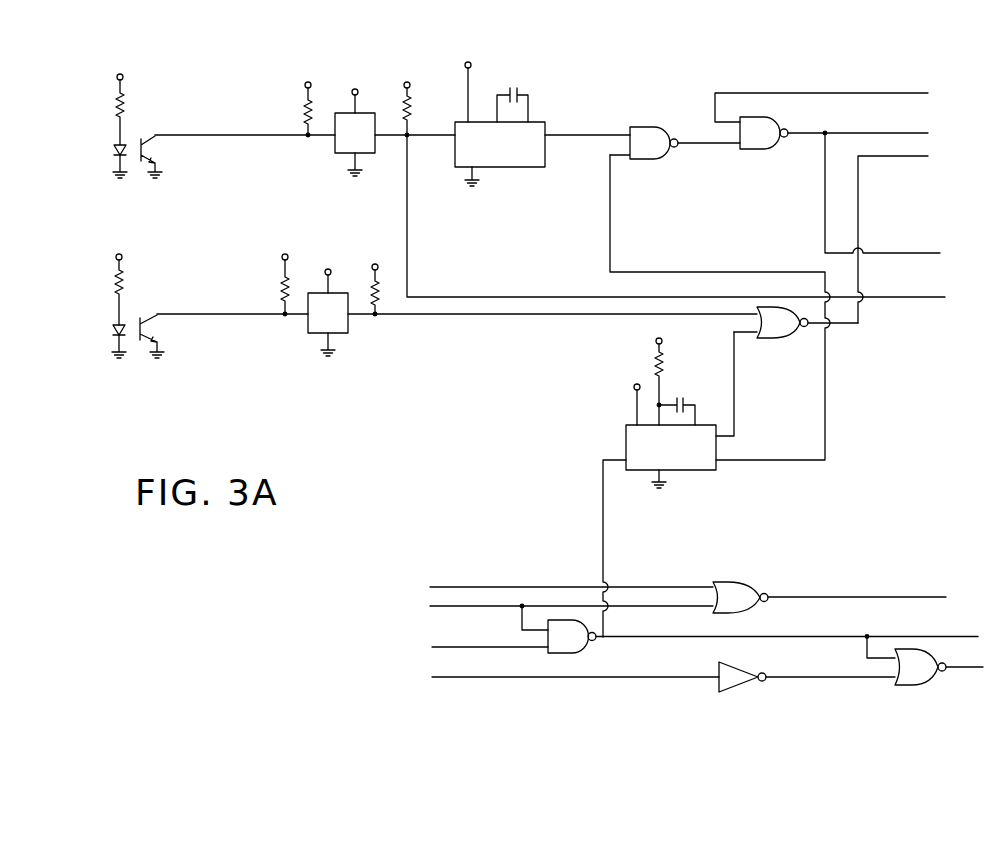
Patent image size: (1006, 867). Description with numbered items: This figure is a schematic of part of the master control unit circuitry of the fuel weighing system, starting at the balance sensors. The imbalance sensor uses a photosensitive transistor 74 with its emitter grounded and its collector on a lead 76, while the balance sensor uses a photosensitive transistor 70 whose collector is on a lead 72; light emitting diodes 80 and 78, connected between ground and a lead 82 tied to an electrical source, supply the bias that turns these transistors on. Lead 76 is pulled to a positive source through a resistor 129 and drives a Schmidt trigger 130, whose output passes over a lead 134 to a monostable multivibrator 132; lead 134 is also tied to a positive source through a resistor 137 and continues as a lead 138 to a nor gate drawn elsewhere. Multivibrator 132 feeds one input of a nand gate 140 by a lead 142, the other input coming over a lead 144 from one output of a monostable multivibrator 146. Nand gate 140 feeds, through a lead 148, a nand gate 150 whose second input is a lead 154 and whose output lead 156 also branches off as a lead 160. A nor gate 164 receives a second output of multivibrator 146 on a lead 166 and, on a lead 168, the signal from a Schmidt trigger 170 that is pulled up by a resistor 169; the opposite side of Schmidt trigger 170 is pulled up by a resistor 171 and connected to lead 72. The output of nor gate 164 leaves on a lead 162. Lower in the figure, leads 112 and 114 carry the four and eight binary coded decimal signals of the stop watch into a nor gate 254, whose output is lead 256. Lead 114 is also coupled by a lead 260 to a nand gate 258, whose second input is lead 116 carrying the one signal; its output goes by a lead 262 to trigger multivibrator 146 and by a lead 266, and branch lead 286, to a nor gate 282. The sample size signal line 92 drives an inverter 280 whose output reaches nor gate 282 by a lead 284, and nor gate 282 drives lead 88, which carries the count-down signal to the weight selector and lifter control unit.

The lead 82 is at (116, 84).
The light emitting diode 80 is at (113, 151).
The photosensitive transistor 74 is at (146, 150).
The lead 76 is at (230, 134).
The resistor 129 is at (305, 103).
The Schmidt trigger 130 is at (366, 113).
The lead 134 is at (421, 134).
The resistor 137 is at (410, 103).
The lead 138 is at (722, 296).
The monostable multivibrator 132 is at (536, 121).
The lead 142 is at (583, 134).
The nand gate 140 is at (651, 128).
The lead 148 is at (708, 146).
The nand gate 150 is at (762, 150).
The lead 154 is at (790, 92).
The lead 156 is at (853, 132).
The lead 160 is at (905, 252).
The lead 162 is at (860, 197).
The lead 144 is at (724, 271).
The light emitting diode 78 is at (112, 329).
The photosensitive transistor 70 is at (146, 329).
The lead 72 is at (213, 313).
The resistor 171 is at (283, 284).
The Schmidt trigger 170 is at (350, 286).
The resistor 169 is at (380, 272).
The lead 168 is at (572, 315).
The nor gate 164 is at (780, 340).
The lead 166 is at (735, 396).
The monostable multivibrator 146 is at (706, 471).
The lead 262 is at (604, 523).
The lead 112 is at (462, 587).
The lead 114 is at (425, 605).
The nor gate 254 is at (749, 590).
The lead 256 is at (870, 596).
The lead 116 is at (440, 646).
The lead 260 is at (521, 623).
The nand gate 258 is at (580, 645).
The lead 266 is at (808, 635).
The lead 286 is at (860, 650).
The nor gate 282 is at (925, 683).
The lead 88 is at (965, 667).
The sample size signal line 92 is at (487, 678).
The inverter 280 is at (745, 689).
The lead 284 is at (852, 678).